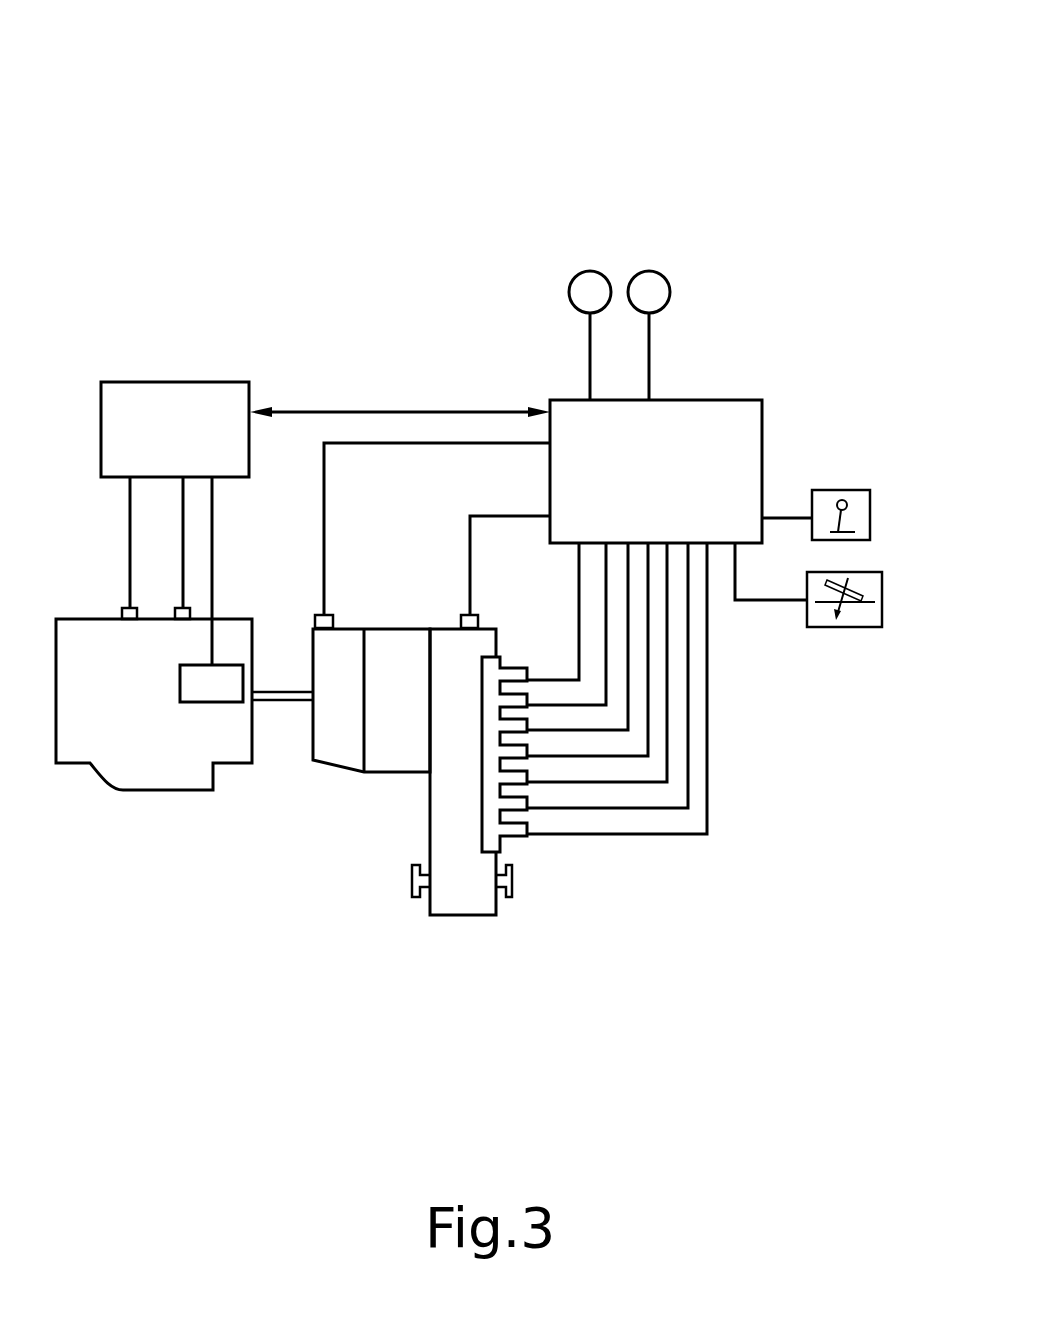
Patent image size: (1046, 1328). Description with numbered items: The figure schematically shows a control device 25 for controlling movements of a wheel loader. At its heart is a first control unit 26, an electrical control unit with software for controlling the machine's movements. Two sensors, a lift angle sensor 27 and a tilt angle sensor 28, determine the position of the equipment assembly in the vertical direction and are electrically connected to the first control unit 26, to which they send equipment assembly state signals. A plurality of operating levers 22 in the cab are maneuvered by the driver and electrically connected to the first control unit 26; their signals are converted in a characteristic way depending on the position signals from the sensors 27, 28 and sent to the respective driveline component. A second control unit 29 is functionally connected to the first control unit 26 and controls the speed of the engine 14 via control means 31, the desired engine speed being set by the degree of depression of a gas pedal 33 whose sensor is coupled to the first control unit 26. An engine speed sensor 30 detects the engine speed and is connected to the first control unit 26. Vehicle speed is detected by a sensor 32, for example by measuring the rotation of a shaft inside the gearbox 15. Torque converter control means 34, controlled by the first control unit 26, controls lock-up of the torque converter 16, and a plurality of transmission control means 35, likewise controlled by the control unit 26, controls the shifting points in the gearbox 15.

The control device 25 is at (566, 74).
The second control unit 29 is at (160, 393).
The first control unit 26 is at (752, 473).
The lift angle sensor 27 is at (590, 278).
The tilt angle sensor 28 is at (655, 278).
The operating levers 22 is at (870, 518).
The gas pedal 33 is at (882, 588).
The engine 14 is at (160, 782).
The engine speed sensor 30 is at (170, 594).
The control means 31 is at (110, 598).
The torque converter 16 is at (321, 788).
The gearbox 15 is at (417, 772).
The torque converter control means 34 is at (304, 604).
The vehicle speed sensor 32 is at (491, 604).
The transmission control means 35 is at (549, 858).